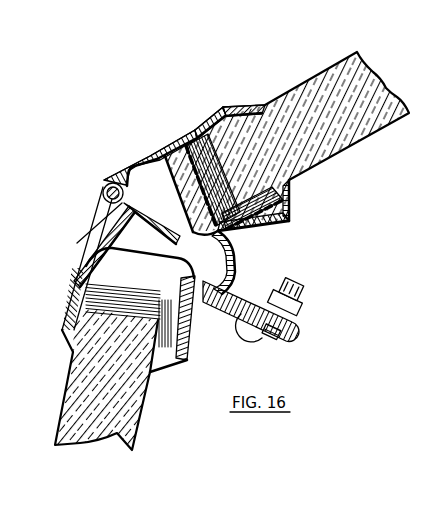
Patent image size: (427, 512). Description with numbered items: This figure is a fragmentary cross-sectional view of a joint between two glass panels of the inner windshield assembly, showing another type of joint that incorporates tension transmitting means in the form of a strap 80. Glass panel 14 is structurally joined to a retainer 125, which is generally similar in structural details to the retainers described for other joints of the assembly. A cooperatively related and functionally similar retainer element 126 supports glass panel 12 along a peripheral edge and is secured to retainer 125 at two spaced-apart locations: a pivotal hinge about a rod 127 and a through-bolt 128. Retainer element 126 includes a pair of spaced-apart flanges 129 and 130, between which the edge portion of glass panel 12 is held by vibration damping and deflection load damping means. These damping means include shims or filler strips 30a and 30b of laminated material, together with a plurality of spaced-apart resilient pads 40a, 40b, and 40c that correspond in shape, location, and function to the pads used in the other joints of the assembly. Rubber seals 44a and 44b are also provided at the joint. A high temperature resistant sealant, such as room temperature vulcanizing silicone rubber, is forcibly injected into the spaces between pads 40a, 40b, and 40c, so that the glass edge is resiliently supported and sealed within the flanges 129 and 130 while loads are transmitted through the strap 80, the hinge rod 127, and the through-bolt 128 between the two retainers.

The glass panel 12 is at (324, 82).
The glass panel 14 is at (133, 429).
The shim or filler strip 30a is at (236, 180).
The shim or filler strip 30b is at (271, 187).
The resilient pad 40a is at (217, 110).
The resilient pad 40b is at (190, 188).
The resilient pad 40c is at (268, 238).
The rubber seal 44a is at (246, 109).
The rubber seal 44b is at (288, 197).
The strap 80 is at (108, 253).
The retainer 125 is at (201, 287).
The retainer element 126 is at (176, 198).
The rod 127 is at (102, 191).
The through-bolt 128 is at (303, 279).
The flange 129 is at (203, 123).
The flange 130 is at (280, 222).